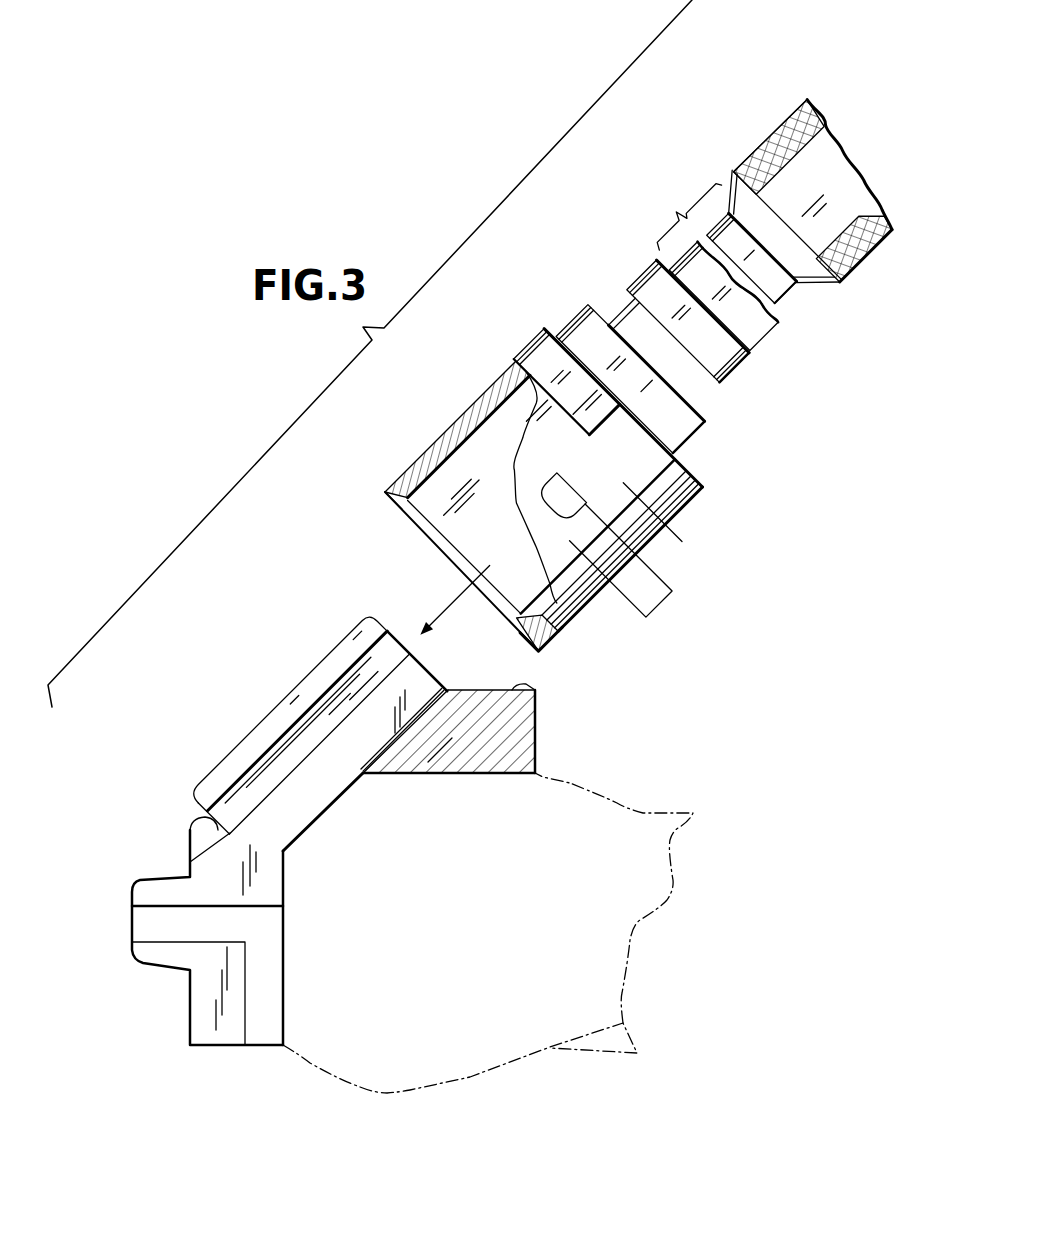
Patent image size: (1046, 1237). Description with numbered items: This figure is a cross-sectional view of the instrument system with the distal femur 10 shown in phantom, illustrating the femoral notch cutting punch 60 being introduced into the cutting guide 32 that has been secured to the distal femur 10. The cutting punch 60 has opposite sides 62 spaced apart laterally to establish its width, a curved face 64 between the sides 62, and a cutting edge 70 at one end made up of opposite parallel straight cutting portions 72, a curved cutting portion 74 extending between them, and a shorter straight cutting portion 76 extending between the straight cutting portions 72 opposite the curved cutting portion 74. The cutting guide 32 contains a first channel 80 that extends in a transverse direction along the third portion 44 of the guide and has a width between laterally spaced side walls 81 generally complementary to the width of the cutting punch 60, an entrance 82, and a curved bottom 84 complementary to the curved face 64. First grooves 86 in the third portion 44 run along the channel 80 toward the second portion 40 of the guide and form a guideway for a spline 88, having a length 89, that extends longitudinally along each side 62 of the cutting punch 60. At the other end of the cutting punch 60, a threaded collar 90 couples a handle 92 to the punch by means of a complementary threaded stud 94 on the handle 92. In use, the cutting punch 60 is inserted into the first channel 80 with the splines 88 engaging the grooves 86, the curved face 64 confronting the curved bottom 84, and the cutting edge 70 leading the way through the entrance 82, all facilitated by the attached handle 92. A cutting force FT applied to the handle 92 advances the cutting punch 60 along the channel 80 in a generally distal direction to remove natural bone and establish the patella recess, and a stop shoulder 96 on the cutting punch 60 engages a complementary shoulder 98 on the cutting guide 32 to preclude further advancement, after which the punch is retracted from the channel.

The distal femur 10 is at (656, 804).
The cutting guide 32 is at (191, 831).
The second portion 40 is at (512, 776).
The third portion 44 is at (288, 833).
The femoral notch cutting punch 60 is at (706, 491).
The opposite sides 62 is at (624, 486).
The curved face 64 is at (566, 626).
The cutting edge 70 is at (441, 546).
The straight cutting portions 72 is at (406, 512).
The curved cutting portion 74 is at (546, 656).
The shorter straight cutting portion 76 is at (384, 493).
The first channel 80 is at (354, 768).
The side walls 81 is at (368, 752).
The entrance 82 is at (521, 686).
The curved bottom 84 is at (440, 754).
The first grooves 86 is at (336, 706).
The spline 88 is at (553, 497).
The length 89 is at (655, 598).
The threaded collar 90 is at (700, 389).
The handle 92 is at (765, 158).
The threaded stud 94 is at (777, 300).
The stop shoulder 96 is at (517, 357).
The shoulder 98 is at (380, 612).
The cutting force FT is at (852, 158).